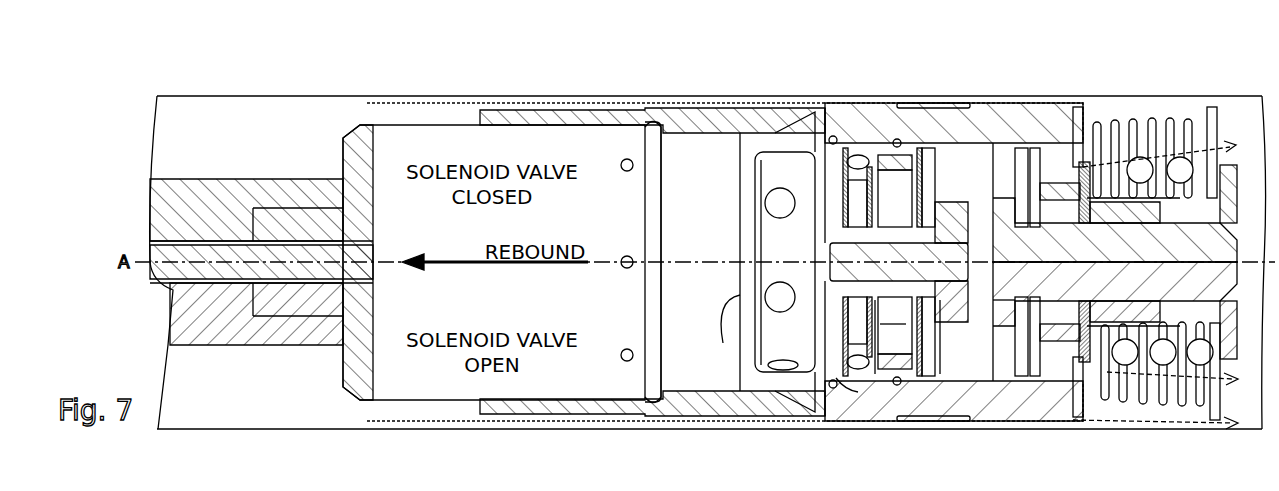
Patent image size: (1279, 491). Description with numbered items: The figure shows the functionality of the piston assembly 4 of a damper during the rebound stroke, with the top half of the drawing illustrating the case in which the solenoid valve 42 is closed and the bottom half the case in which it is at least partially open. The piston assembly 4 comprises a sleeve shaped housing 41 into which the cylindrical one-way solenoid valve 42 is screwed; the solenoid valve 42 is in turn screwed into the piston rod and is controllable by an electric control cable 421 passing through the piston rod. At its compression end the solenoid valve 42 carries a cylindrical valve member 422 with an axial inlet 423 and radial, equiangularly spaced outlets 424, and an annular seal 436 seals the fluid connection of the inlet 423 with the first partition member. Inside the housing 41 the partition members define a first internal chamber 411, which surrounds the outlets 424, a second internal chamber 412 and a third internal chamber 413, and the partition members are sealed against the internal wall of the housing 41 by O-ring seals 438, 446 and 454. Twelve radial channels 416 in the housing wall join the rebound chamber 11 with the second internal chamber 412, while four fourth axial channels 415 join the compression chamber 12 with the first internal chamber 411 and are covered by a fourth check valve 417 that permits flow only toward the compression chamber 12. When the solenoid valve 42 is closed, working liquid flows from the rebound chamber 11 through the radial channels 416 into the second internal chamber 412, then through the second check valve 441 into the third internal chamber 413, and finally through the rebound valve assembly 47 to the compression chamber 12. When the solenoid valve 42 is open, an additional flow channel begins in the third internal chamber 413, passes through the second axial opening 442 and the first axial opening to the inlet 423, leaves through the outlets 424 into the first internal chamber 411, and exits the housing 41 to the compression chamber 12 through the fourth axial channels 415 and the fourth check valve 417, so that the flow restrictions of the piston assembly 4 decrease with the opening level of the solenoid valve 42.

The piston assembly 4 is at (633, 100).
The rebound chamber 11 is at (301, 115).
The compression chamber 12 is at (1214, 140).
The housing 41 is at (665, 132).
The solenoid valve 42 is at (410, 150).
The rebound valve assembly 47 is at (1110, 140).
The first internal chamber 411 is at (750, 140).
The second internal chamber 412 is at (882, 140).
The third internal chamber 413 is at (987, 150).
The fourth axial channels 415 is at (993, 410).
The radial channels 416 is at (846, 148).
The fourth check valve 417 is at (1088, 365).
The electric control cable 421 is at (201, 245).
The valve member 422 is at (765, 180).
The inlet 423 is at (877, 372).
The outlets 424 is at (783, 372).
The annular seal 436 is at (801, 148).
The O-ring seal 438 is at (840, 388).
The second check valve 441 is at (949, 374).
The second axial opening 442 is at (908, 170).
The O-ring seal 446 is at (901, 374).
The O-ring seal 454 is at (1045, 380).